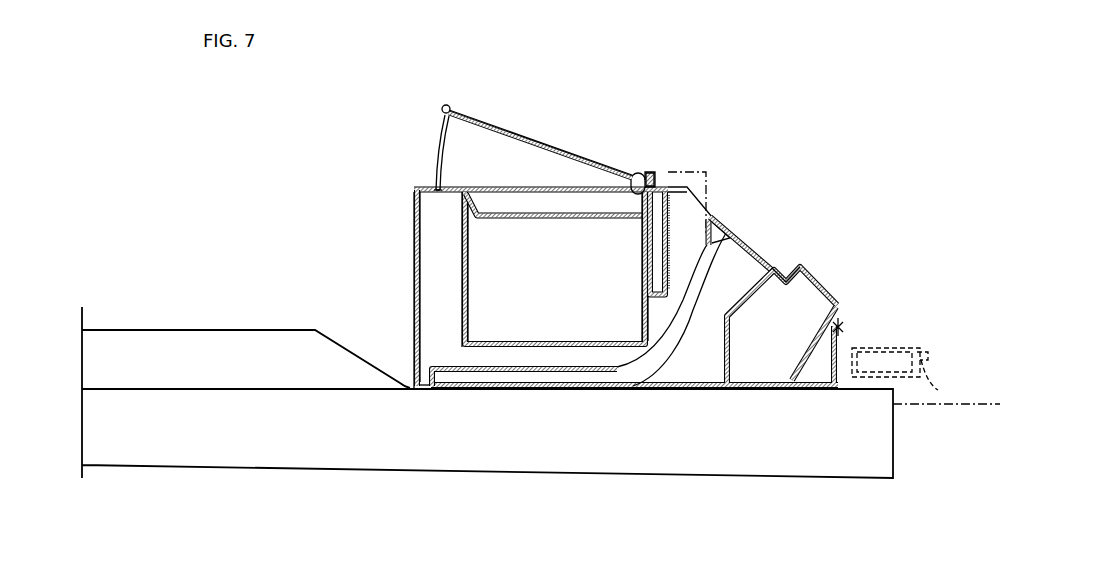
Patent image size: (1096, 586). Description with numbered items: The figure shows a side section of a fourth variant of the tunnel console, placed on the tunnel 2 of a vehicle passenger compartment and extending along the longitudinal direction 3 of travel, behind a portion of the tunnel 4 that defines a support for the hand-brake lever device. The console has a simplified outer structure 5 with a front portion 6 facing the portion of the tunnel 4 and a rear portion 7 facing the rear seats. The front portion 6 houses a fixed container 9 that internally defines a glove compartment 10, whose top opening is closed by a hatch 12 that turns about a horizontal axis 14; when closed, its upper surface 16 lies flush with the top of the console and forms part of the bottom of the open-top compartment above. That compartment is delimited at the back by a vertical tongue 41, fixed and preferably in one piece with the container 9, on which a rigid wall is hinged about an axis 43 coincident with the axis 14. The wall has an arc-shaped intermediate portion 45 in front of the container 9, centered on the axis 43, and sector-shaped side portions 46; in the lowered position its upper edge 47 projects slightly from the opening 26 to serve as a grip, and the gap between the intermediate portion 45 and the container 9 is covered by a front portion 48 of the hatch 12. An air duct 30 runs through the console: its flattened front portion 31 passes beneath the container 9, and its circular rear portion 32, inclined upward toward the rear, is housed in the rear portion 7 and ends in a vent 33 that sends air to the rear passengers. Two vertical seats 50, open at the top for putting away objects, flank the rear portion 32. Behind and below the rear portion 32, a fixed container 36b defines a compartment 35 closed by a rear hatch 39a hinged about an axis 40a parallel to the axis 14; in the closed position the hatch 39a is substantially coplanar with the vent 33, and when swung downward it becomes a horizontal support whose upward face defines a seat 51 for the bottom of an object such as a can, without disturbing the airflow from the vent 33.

The tunnel 2 is at (847, 390).
The longitudinal direction 3 is at (937, 404).
The portion of the tunnel 4 is at (307, 330).
The outer structure 5 is at (421, 183).
The front portion 6 is at (414, 224).
The rear portion 7 is at (757, 297).
The container 9 is at (462, 288).
The glove compartment 10 is at (487, 308).
The hatch 12 is at (613, 200).
The axis 14 is at (648, 165).
The upper surface 16 is at (586, 180).
The opening 26 is at (448, 186).
The air duct 30 is at (587, 391).
The front portion 31 is at (530, 369).
The rear portion 32 is at (673, 318).
The vent 33 is at (753, 247).
The compartment 35 is at (803, 351).
The container 36b is at (790, 276).
The rear hatch 39a is at (938, 390).
The axis 40a is at (840, 333).
The vertical tongue 41 is at (661, 181).
The axis 43 is at (648, 165).
The intermediate portion 45 is at (437, 143).
The side portions 46 is at (565, 181).
The upper edge 47 is at (512, 153).
The front portion 48 is at (466, 189).
The vertical seats 50 is at (674, 212).
The seat 51 is at (898, 359).